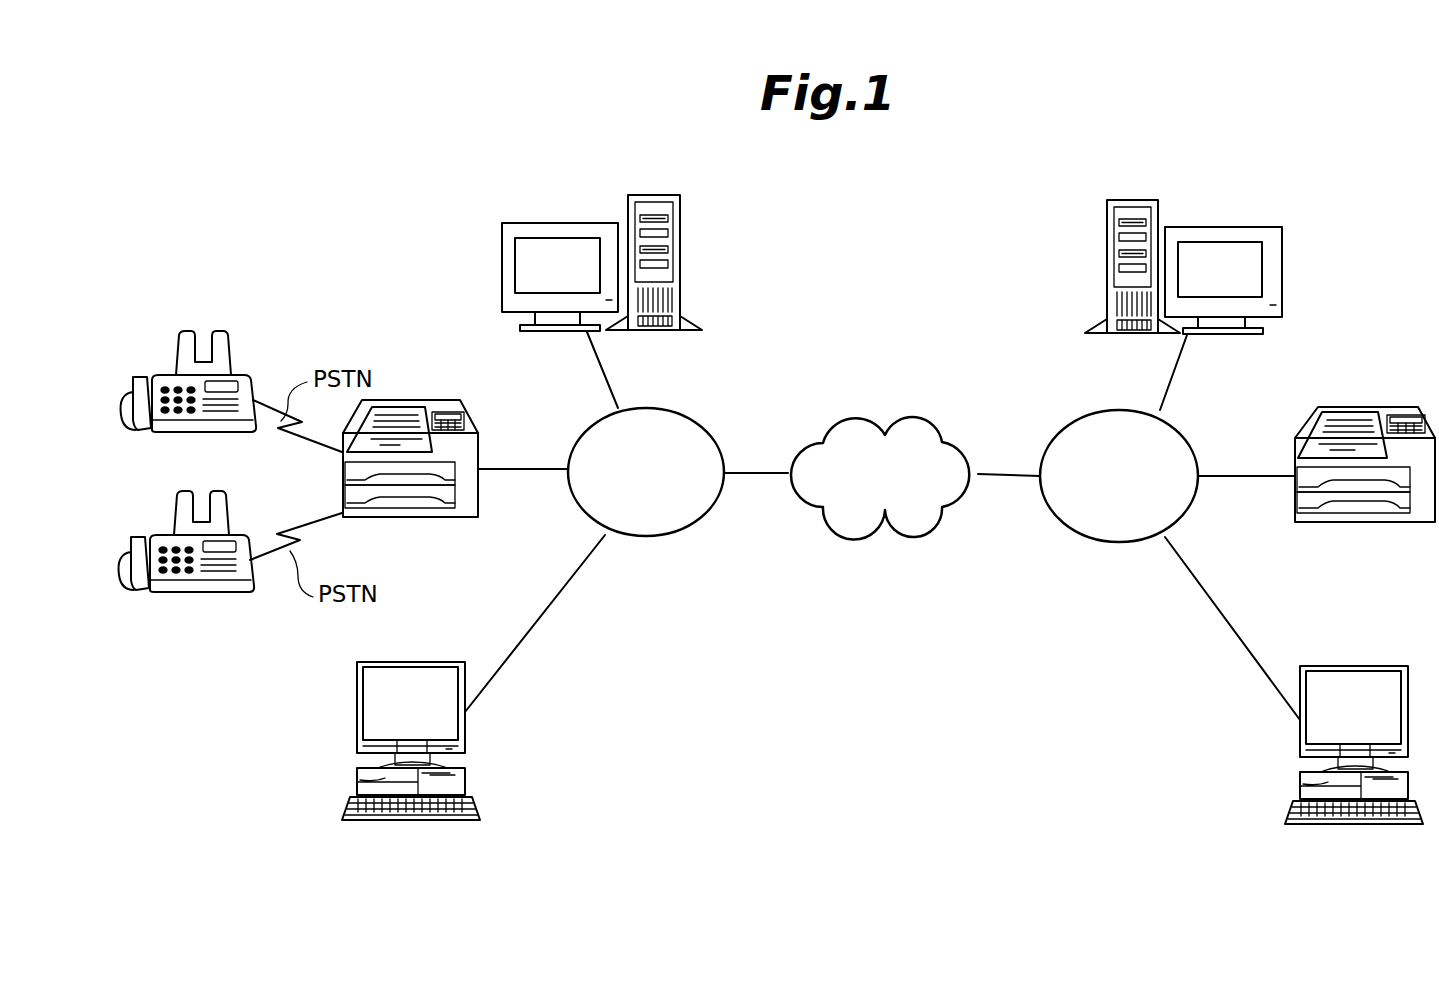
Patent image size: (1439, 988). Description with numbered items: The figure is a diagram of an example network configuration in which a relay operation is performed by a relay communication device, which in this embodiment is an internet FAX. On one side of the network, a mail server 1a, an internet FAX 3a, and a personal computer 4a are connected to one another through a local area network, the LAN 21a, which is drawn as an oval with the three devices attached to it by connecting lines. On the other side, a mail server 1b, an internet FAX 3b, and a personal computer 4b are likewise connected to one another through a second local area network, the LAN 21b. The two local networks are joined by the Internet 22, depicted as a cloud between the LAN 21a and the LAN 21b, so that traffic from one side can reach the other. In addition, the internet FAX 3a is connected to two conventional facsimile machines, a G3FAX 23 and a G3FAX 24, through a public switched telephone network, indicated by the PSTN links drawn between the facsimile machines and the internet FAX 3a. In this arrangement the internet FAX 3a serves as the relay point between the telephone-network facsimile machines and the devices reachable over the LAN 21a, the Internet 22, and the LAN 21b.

The mail server 1a is at (683, 248).
The mail server 1b is at (1283, 255).
The internet FAX 3a is at (416, 406).
The internet FAX 3b is at (1375, 407).
The personal computer 4a is at (420, 662).
The personal computer 4b is at (1375, 667).
The LAN 21a is at (688, 418).
The LAN 21b is at (1185, 438).
The Internet 22 is at (900, 418).
The G3FAX 23 is at (240, 375).
The G3FAX 24 is at (243, 535).